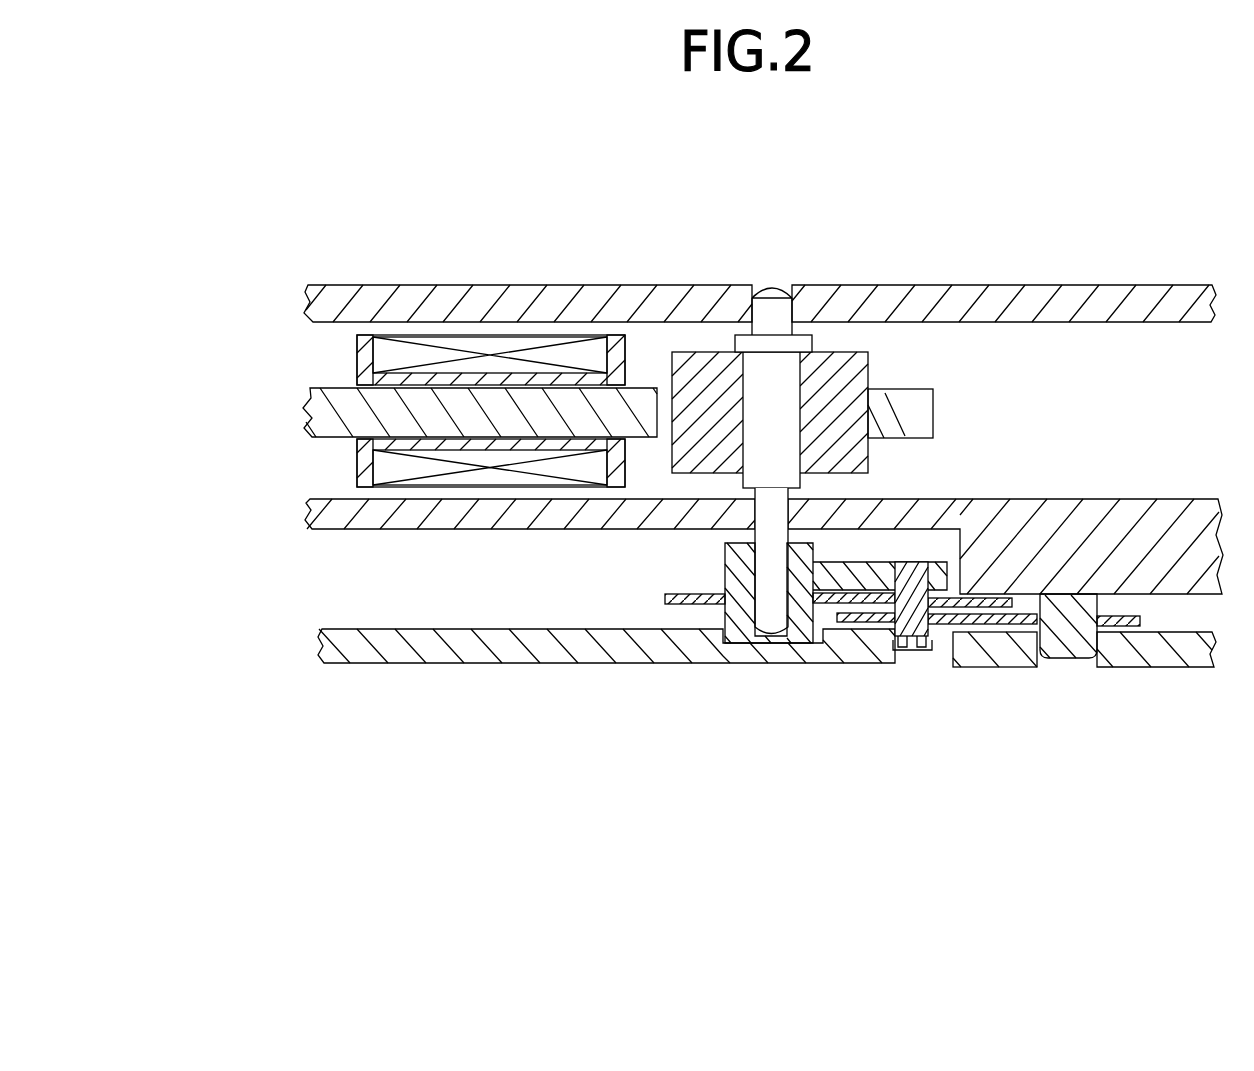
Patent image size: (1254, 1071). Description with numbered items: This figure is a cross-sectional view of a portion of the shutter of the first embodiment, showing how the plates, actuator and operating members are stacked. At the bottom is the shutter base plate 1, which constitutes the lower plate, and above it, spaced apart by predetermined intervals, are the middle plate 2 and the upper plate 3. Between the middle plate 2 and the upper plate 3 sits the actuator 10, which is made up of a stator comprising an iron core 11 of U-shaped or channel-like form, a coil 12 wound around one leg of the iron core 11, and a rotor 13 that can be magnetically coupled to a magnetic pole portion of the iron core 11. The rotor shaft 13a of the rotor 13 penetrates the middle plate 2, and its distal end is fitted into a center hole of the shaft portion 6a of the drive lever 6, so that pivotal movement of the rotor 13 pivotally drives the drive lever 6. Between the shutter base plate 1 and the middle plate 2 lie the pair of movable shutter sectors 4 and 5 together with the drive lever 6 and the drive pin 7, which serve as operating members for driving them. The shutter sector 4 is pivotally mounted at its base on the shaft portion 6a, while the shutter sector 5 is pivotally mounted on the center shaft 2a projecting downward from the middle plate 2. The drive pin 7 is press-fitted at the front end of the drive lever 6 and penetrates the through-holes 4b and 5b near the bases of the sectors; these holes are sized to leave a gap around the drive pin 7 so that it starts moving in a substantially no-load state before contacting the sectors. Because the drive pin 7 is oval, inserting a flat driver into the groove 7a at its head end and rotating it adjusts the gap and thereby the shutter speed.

The shutter base plate 1 is at (418, 648).
The middle plate 2 is at (729, 618).
The center shaft 2a is at (1072, 638).
The upper plate 3 is at (345, 300).
The movable shutter sector 4 is at (665, 598).
The through-hole 4b is at (893, 616).
The movable shutter sector 5 is at (1007, 638).
The through-hole 5b is at (920, 646).
The drive lever 6 is at (781, 538).
The shaft portion 6a is at (738, 555).
The drive pin 7 is at (912, 667).
The groove 7a is at (917, 645).
The actuator 10 is at (401, 412).
The iron core 11 is at (337, 408).
The coil 12 is at (363, 470).
The rotor 13 is at (838, 370).
The rotor shaft 13a is at (757, 385).